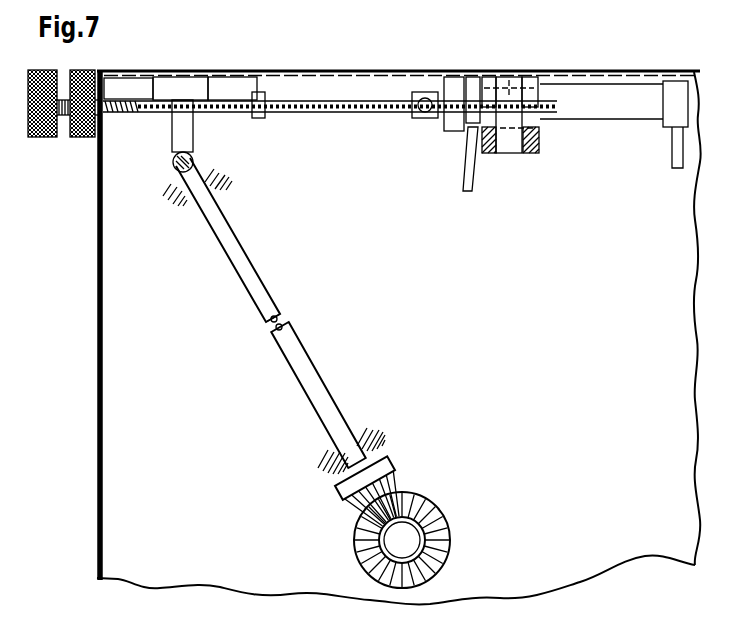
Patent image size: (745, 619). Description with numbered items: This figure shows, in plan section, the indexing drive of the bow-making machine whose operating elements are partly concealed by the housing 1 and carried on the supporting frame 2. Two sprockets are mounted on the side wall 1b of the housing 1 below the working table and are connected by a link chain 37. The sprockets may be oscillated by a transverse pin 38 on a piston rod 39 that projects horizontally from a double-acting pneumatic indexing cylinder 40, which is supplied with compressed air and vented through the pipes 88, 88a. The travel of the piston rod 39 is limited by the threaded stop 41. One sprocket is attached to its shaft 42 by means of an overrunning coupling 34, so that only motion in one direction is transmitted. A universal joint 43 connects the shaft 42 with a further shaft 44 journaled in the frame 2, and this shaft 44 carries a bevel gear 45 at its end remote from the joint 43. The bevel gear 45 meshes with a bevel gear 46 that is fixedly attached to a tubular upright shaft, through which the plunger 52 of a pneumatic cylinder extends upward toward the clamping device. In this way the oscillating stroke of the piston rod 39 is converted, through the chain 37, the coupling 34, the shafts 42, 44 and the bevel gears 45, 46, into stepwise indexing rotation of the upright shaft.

The housing 1 is at (100, 463).
The side wall 1b is at (247, 72).
The supporting frame 2 is at (530, 150).
The overrunning coupling 34 is at (177, 88).
The link chain 37 is at (330, 110).
The transverse pin 38 is at (425, 112).
The piston rod 39 is at (442, 114).
The double-acting pneumatic indexing cylinder 40 is at (590, 108).
The threaded stop 41 is at (44, 137).
The shaft 42 is at (176, 139).
The universal joint 43 is at (173, 162).
The shaft 44 is at (305, 357).
The bevel gear 45 is at (404, 476).
The bevel gear 46 is at (430, 522).
The plunger 52 is at (408, 545).
The pipe 88 is at (672, 148).
The pipe 88a is at (473, 162).